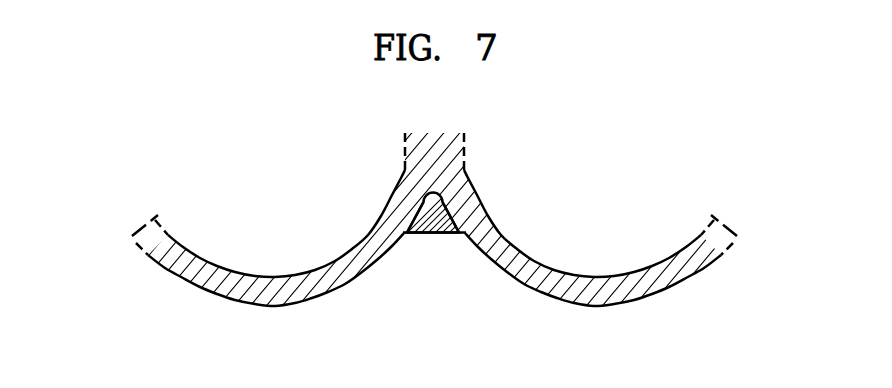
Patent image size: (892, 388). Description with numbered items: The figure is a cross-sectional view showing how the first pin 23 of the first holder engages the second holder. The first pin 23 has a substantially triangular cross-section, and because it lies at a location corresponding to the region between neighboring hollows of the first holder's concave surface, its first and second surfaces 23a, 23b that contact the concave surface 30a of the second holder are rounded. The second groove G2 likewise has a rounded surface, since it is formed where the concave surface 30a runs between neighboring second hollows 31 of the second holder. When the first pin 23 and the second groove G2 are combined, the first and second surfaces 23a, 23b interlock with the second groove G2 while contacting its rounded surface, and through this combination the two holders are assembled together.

The second hollow 31 is at (274, 200).
The first pin 23 is at (431, 234).
The first surface 23a is at (414, 234).
The second surface 23b is at (450, 234).
The second groove G2 is at (414, 206).
The concave surface 30a is at (451, 209).